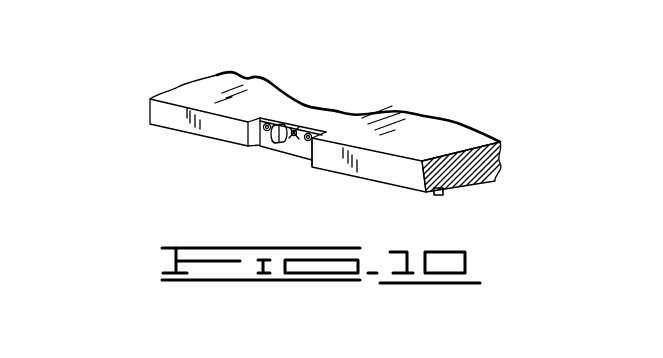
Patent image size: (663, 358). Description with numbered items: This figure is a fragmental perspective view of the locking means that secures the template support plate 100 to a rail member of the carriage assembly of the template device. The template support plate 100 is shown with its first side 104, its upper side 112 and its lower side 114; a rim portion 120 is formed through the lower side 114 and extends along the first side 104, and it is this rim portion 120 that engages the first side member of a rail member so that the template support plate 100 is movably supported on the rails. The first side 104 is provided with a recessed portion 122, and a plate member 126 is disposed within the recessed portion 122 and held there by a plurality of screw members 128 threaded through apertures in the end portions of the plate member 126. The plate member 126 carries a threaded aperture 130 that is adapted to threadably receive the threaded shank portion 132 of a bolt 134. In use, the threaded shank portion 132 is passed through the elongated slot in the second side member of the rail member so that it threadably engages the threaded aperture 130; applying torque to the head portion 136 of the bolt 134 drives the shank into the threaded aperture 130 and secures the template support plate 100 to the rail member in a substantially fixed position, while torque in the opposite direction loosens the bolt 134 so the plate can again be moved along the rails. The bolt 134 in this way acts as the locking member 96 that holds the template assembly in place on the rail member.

The locking member 96 is at (313, 151).
The template support plate 100 is at (460, 133).
The first side 104 is at (163, 112).
The upper side 112 is at (201, 100).
The lower side 114 is at (474, 185).
The rim portion 120 is at (437, 196).
The recessed portion 122 is at (305, 155).
The plate member 126 is at (316, 126).
The screw members 128 is at (268, 121).
The threaded aperture 130 is at (298, 144).
The threaded shank portion 132 is at (297, 131).
The bolt 134 is at (279, 148).
The head portion 136 is at (289, 126).